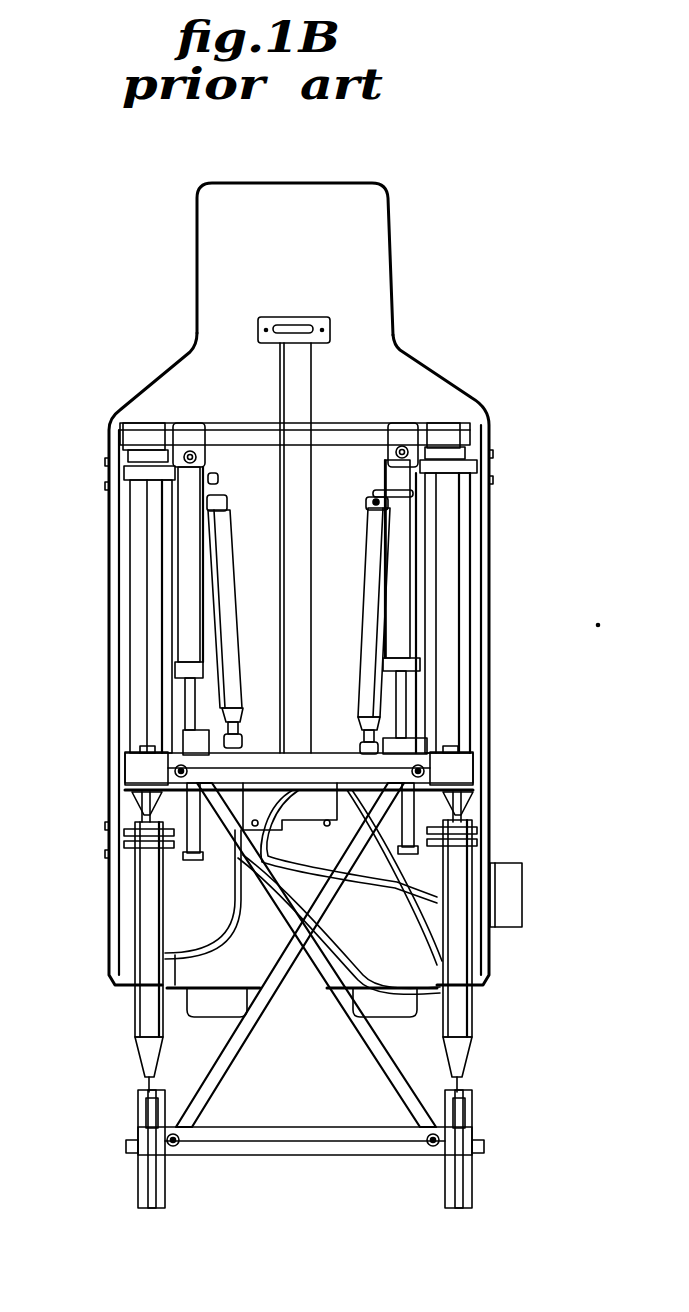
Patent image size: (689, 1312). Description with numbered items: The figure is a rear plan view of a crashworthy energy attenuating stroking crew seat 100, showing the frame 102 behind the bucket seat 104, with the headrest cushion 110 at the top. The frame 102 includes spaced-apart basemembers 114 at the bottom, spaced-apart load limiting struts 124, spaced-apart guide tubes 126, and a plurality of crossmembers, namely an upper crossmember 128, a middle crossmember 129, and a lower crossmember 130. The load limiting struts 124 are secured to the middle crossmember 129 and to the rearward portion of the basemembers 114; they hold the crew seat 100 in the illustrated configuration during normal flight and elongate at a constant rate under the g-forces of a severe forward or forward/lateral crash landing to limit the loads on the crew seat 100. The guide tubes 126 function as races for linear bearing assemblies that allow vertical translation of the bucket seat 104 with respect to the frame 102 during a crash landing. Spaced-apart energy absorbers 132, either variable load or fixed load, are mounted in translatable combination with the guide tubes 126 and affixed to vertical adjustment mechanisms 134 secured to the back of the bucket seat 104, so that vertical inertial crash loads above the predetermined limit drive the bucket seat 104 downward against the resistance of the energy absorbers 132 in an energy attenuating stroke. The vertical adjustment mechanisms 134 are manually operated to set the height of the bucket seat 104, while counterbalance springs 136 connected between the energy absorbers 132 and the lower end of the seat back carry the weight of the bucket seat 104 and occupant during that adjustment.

The crew seat 100 is at (299, 695).
The frame 102 is at (238, 955).
The bucket seat 104 is at (397, 390).
The headrest cushion 110 is at (310, 258).
The basemembers 114 is at (138, 1182).
The load limiting struts 124 is at (143, 1008).
The guide tubes 126 is at (135, 617).
The upper crossmember 128 is at (247, 435).
The middle crossmember 129 is at (332, 762).
The lower crossmember 130 is at (302, 1137).
The energy absorbers 132 is at (212, 589).
The vertical adjustment mechanisms 134 is at (203, 707).
The counterbalance springs 136 is at (224, 512).